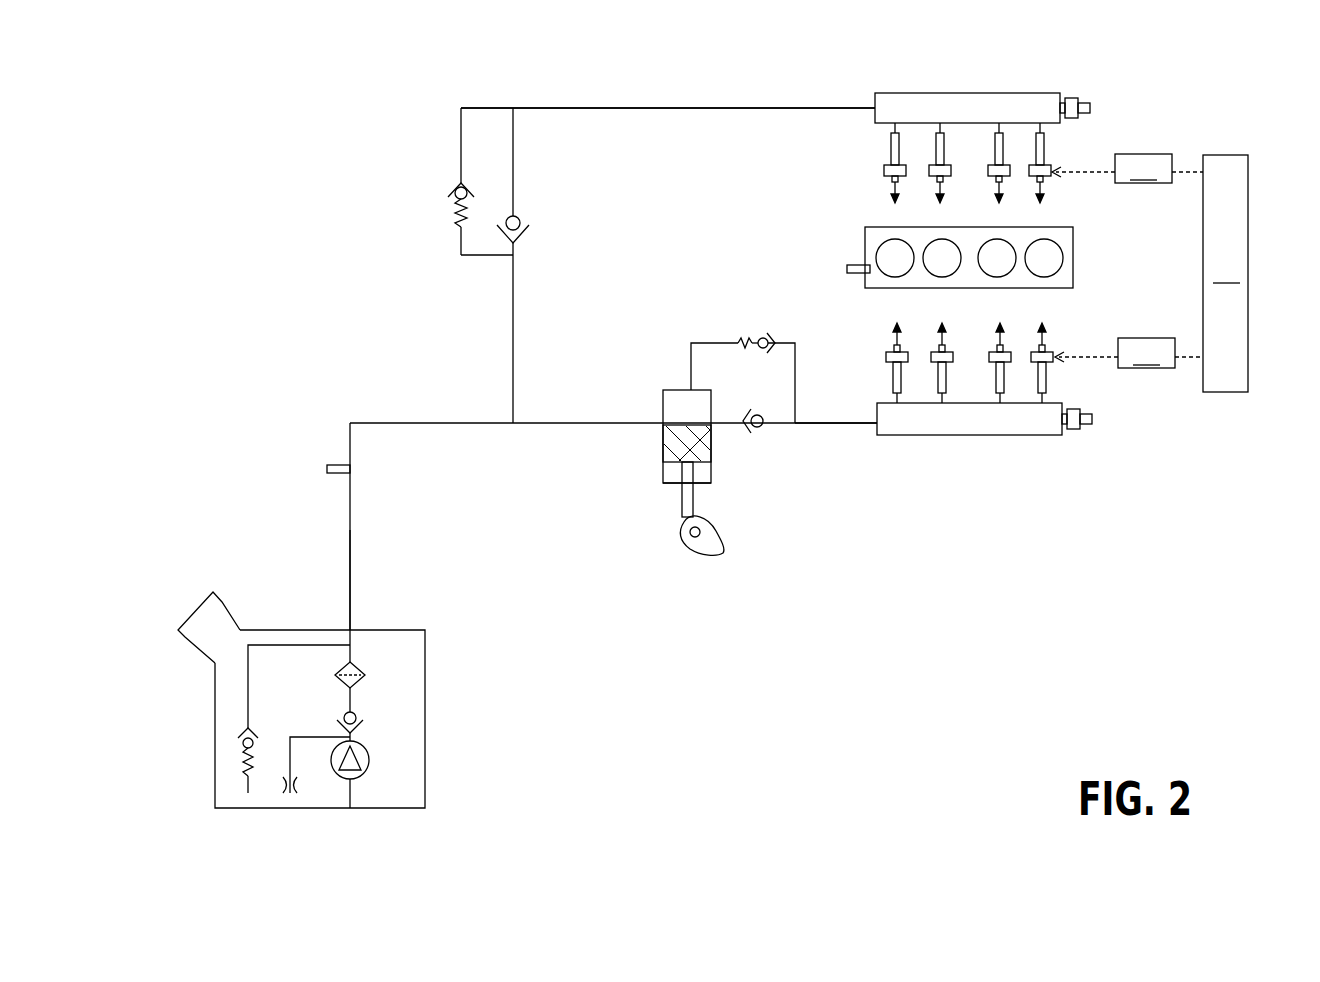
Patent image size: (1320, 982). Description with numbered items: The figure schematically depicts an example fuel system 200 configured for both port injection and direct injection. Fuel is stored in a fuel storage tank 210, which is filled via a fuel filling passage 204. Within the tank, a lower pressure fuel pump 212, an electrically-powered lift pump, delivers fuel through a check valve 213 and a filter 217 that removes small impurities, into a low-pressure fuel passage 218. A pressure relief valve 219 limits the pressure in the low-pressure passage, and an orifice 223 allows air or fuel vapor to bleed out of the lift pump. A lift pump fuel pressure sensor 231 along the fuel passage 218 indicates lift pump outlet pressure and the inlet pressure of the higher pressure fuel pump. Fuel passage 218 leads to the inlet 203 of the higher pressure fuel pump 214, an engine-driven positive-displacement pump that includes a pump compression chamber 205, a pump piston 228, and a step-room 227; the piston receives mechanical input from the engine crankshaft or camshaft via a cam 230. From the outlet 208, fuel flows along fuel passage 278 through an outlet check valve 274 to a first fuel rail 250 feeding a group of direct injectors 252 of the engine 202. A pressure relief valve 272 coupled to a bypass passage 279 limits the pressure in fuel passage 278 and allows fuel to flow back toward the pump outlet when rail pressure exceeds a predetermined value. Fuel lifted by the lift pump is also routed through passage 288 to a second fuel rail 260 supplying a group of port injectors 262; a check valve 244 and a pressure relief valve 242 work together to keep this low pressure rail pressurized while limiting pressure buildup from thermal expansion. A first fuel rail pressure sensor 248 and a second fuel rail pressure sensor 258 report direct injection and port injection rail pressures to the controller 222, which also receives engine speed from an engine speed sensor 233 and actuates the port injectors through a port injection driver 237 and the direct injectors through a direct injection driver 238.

The fuel system 200 is at (178, 131).
The engine 202 is at (1073, 261).
The inlet 203 is at (660, 421).
The fuel filling passage 204 is at (225, 615).
The pump compression chamber 205 is at (697, 410).
The outlet 208 is at (706, 424).
The fuel storage tank 210 is at (319, 694).
The lower pressure fuel pump 212 is at (369, 766).
The check valve 213 is at (357, 715).
The higher pressure fuel pump 214 is at (707, 455).
The filter 217 is at (359, 670).
The fuel passage 218 is at (351, 601).
The pressure relief valve 219 is at (240, 762).
The controller 222 is at (1225, 273).
The orifice 223 is at (284, 789).
The step-room 227 is at (668, 483).
The pump piston 228 is at (697, 465).
The cam 230 is at (722, 552).
The lift pump fuel pressure sensor 231 is at (344, 465).
The engine speed sensor 233 is at (856, 265).
The port injection driver 237 is at (1127, 168).
The direct injection driver 238 is at (1129, 353).
The pressure relief valve 242 is at (456, 181).
The check valve 244 is at (518, 212).
The first fuel rail pressure sensor 248 is at (1092, 421).
The first fuel rail 250 is at (1062, 408).
The direct injectors 252 is at (990, 353).
The second fuel rail pressure sensor 258 is at (1090, 108).
The second fuel rail 260 is at (1060, 123).
The port injectors 262 is at (991, 177).
The pressure relief valve 272 is at (746, 338).
The check valve 274 is at (745, 410).
The fuel passage 278 is at (818, 421).
The bypass passage 279 is at (706, 343).
The fuel passage 288 is at (627, 107).